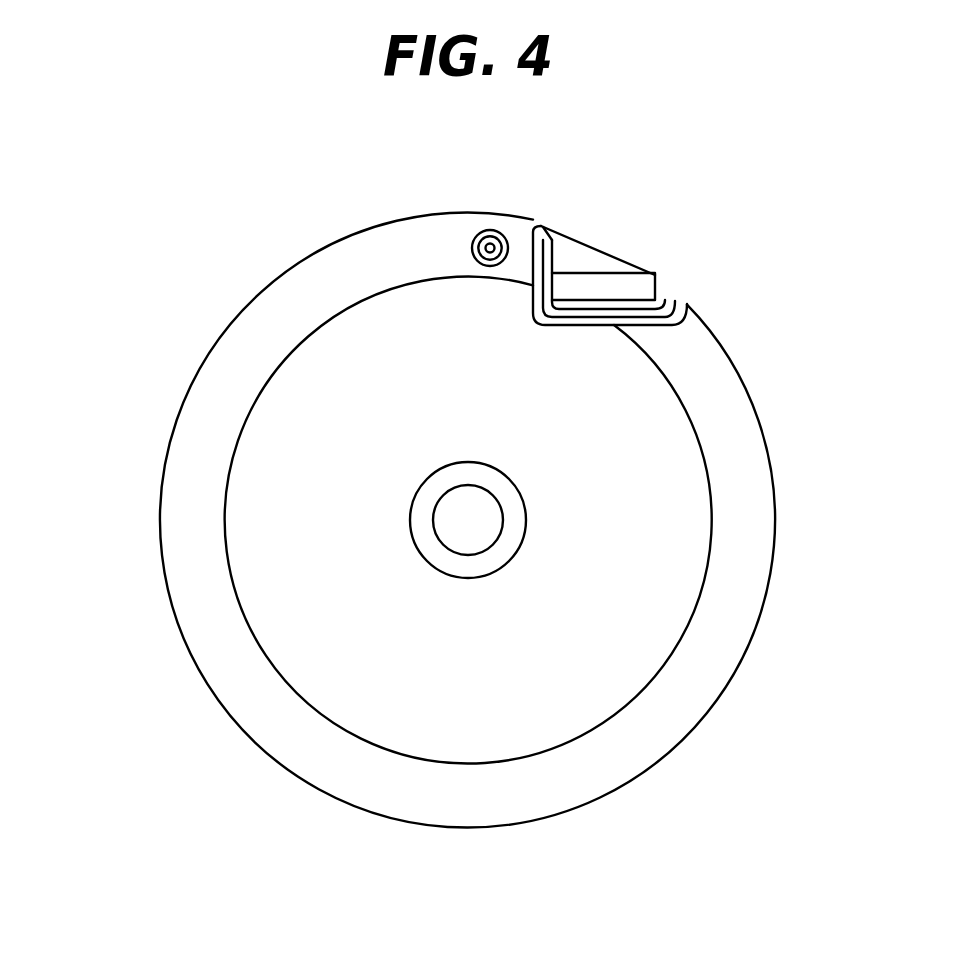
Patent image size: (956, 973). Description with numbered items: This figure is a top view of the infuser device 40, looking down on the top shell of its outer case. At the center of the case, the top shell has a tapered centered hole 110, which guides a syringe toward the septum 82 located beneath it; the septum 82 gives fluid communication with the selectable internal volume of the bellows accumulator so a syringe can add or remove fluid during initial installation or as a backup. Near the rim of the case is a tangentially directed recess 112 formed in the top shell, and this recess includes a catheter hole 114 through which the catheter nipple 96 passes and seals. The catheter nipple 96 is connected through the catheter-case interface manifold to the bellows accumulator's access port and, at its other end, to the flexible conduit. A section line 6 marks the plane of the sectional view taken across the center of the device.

The disc assembly 40 is at (683, 748).
The septum 82 is at (488, 490).
The tapered centered hole 110 is at (515, 508).
The tangentially directed recess 112 is at (580, 263).
The catheter hole 114 is at (556, 268).
The catheter nipple 96 is at (651, 273).
The section line 6- 6 is at (150, 523).